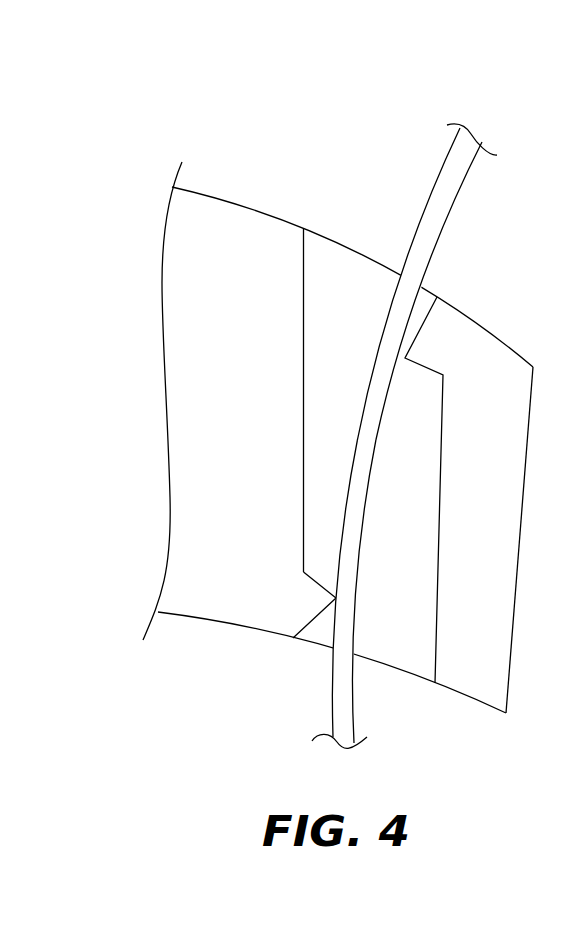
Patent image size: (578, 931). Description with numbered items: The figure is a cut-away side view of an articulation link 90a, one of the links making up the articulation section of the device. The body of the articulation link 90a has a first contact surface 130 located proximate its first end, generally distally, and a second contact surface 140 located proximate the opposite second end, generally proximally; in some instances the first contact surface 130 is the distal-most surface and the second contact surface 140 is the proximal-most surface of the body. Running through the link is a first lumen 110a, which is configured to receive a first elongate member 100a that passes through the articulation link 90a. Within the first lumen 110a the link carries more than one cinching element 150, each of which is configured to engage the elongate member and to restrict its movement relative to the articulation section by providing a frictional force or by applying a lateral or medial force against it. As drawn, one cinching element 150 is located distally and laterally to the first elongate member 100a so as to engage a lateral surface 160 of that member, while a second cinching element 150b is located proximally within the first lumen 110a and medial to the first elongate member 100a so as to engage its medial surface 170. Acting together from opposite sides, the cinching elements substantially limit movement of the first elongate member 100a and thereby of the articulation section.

The articulation link 90a is at (121, 367).
The first elongate member 100a is at (403, 394).
The first lumen 110a is at (287, 395).
The first contact surface 130 is at (257, 170).
The second contact surface 140 is at (217, 655).
The cinching element 150 is at (470, 338).
The second cinching element 150b is at (269, 589).
The lateral surface 160 is at (470, 183).
The medial surface 170 is at (327, 695).